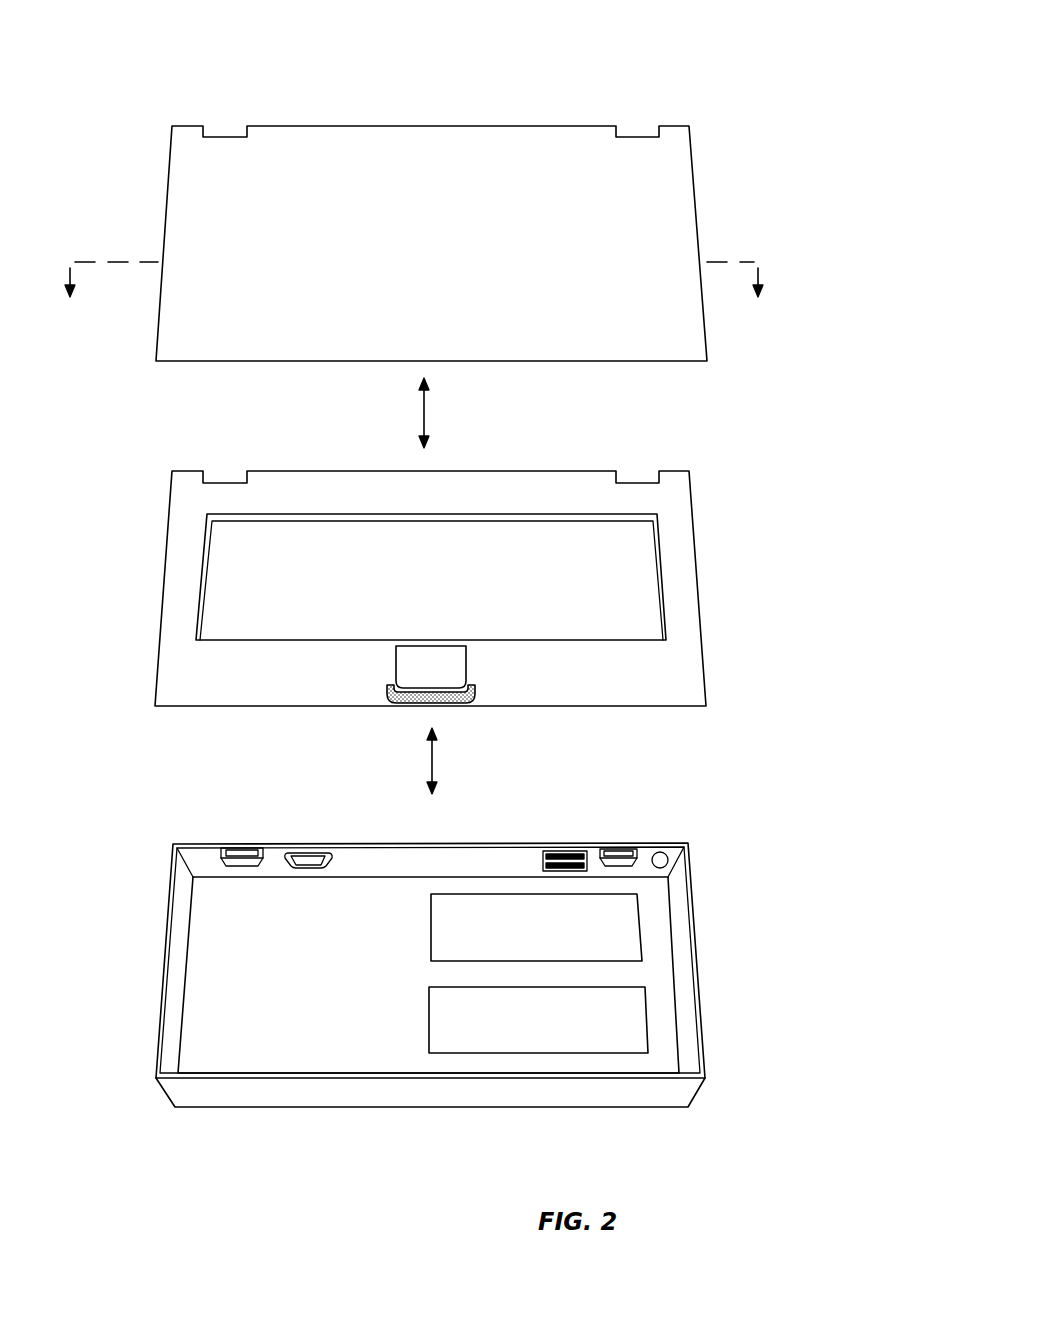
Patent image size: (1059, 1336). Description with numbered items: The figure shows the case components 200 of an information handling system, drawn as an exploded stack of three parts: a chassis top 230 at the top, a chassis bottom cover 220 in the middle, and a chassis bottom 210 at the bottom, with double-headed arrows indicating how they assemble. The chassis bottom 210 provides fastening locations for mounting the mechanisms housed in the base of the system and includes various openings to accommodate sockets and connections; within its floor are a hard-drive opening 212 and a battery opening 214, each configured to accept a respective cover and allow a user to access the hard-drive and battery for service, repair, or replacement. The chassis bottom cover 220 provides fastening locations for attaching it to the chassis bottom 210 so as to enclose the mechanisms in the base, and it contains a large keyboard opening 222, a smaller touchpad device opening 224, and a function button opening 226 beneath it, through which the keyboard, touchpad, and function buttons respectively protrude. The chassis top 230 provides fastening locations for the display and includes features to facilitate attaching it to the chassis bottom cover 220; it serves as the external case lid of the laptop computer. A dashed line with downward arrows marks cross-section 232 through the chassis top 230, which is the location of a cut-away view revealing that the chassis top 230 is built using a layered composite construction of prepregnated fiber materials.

The case components 200 is at (762, 86).
The chassis bottom 210 is at (208, 843).
The hard-drive opening 212 is at (432, 898).
The battery opening 214 is at (430, 991).
The chassis bottom cover 220 is at (186, 471).
The keyboard opening 222 is at (208, 584).
The touchpad device opening 224 is at (395, 660).
The function button opening 226 is at (387, 689).
The chassis top 230 is at (186, 126).
The cross-section 232 is at (91, 262).